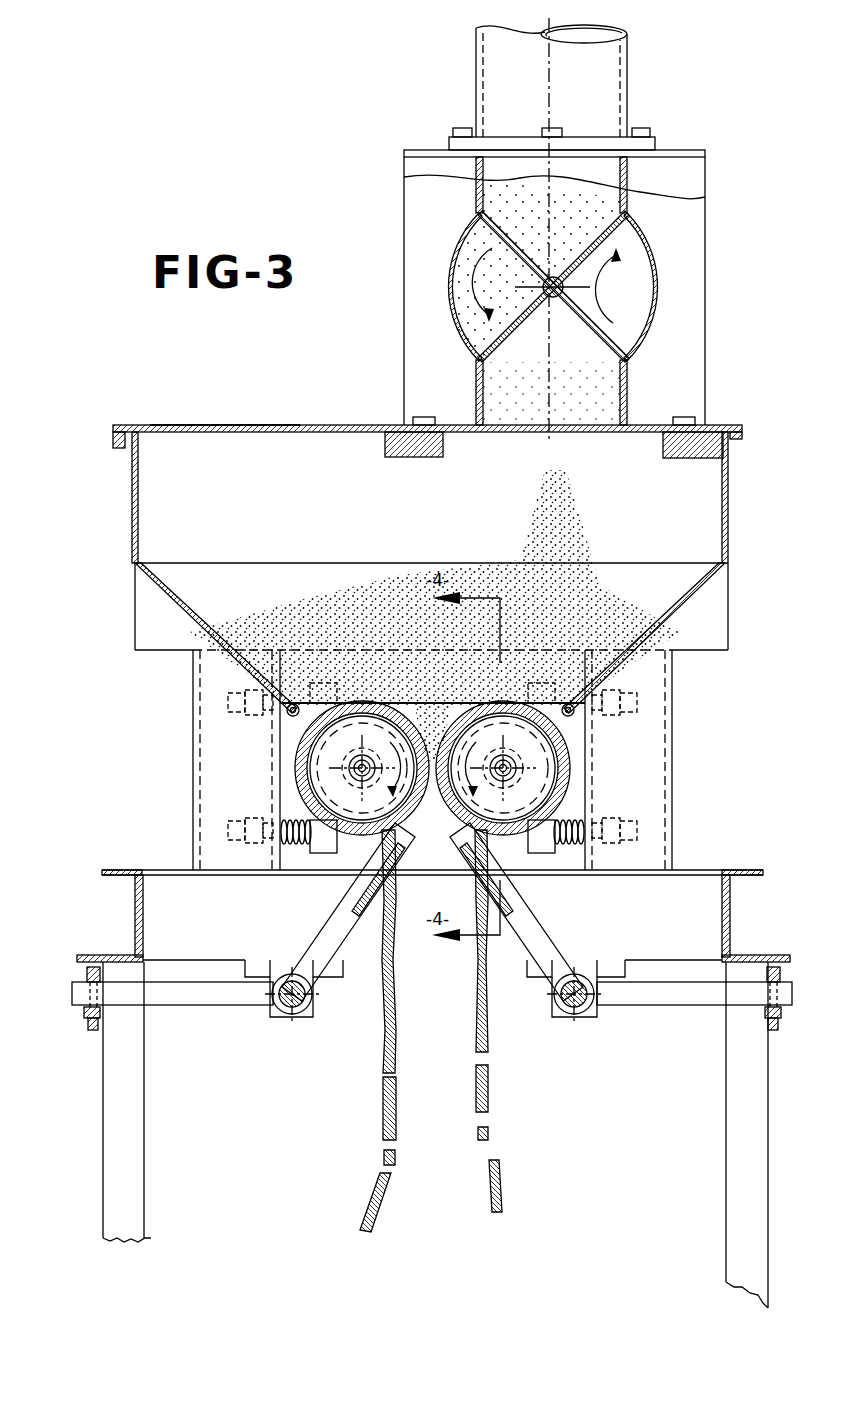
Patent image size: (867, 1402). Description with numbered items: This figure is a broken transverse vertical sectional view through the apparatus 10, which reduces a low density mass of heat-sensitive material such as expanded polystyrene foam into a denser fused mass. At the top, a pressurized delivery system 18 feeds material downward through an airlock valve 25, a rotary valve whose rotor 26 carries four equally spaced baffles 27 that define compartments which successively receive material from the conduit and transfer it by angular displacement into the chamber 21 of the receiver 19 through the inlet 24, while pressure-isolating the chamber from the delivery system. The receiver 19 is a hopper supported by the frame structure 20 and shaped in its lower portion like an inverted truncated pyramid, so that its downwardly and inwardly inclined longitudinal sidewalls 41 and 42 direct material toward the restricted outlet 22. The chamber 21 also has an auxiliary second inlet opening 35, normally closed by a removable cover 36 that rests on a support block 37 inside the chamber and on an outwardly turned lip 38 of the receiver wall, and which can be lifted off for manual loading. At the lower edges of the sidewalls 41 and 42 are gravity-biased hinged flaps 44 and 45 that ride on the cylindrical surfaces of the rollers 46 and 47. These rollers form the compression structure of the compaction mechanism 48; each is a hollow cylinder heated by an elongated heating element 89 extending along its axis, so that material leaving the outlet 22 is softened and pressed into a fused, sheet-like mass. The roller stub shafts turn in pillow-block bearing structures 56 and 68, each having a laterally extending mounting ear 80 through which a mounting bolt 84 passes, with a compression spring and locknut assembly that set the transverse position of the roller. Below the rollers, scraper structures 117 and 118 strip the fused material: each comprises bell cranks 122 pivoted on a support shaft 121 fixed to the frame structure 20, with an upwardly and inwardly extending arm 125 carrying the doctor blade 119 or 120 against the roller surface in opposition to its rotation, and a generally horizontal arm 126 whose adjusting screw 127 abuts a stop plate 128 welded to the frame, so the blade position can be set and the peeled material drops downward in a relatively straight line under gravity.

The apparatus 10 is at (132, 422).
The pressurized delivery system 18 is at (476, 70).
The receiver 19 is at (132, 497).
The frame structure 20 is at (103, 1162).
The chamber 21 is at (165, 540).
The outlet 22 is at (433, 694).
The inlet 24 is at (595, 425).
The airlock valve 25 is at (657, 302).
The rotor 26 is at (565, 287).
The baffles 27 is at (636, 342).
The second inlet opening 35 is at (227, 427).
The removable cover 36 is at (177, 427).
The support block 37 is at (387, 452).
The outwardly turned lip 38 is at (124, 446).
The longitudinal sidewall 41 is at (178, 611).
The longitudinal sidewall 42 is at (700, 597).
The hinged flap 44 is at (300, 716).
The hinged flap 45 is at (562, 717).
The roller 46 is at (300, 778).
The roller 47 is at (572, 766).
The compaction mechanism 48 is at (290, 764).
The bearing structure 56 is at (562, 807).
The bearing structure 68 is at (300, 798).
The mounting ear 80 is at (227, 702).
The mounting bolt 84 is at (227, 830).
The heating element 89 is at (357, 765).
The scraper structure 117 is at (318, 924).
The scraper structure 118 is at (563, 939).
The scraper blade 119 is at (393, 845).
The scraper blade 120 is at (472, 838).
The support shaft 121 is at (275, 1010).
The bell crank 122 is at (293, 1018).
The arm 125 is at (332, 903).
The arm 126 is at (193, 998).
The adjusting screw 127 is at (85, 1026).
The stop plate 128 is at (82, 956).